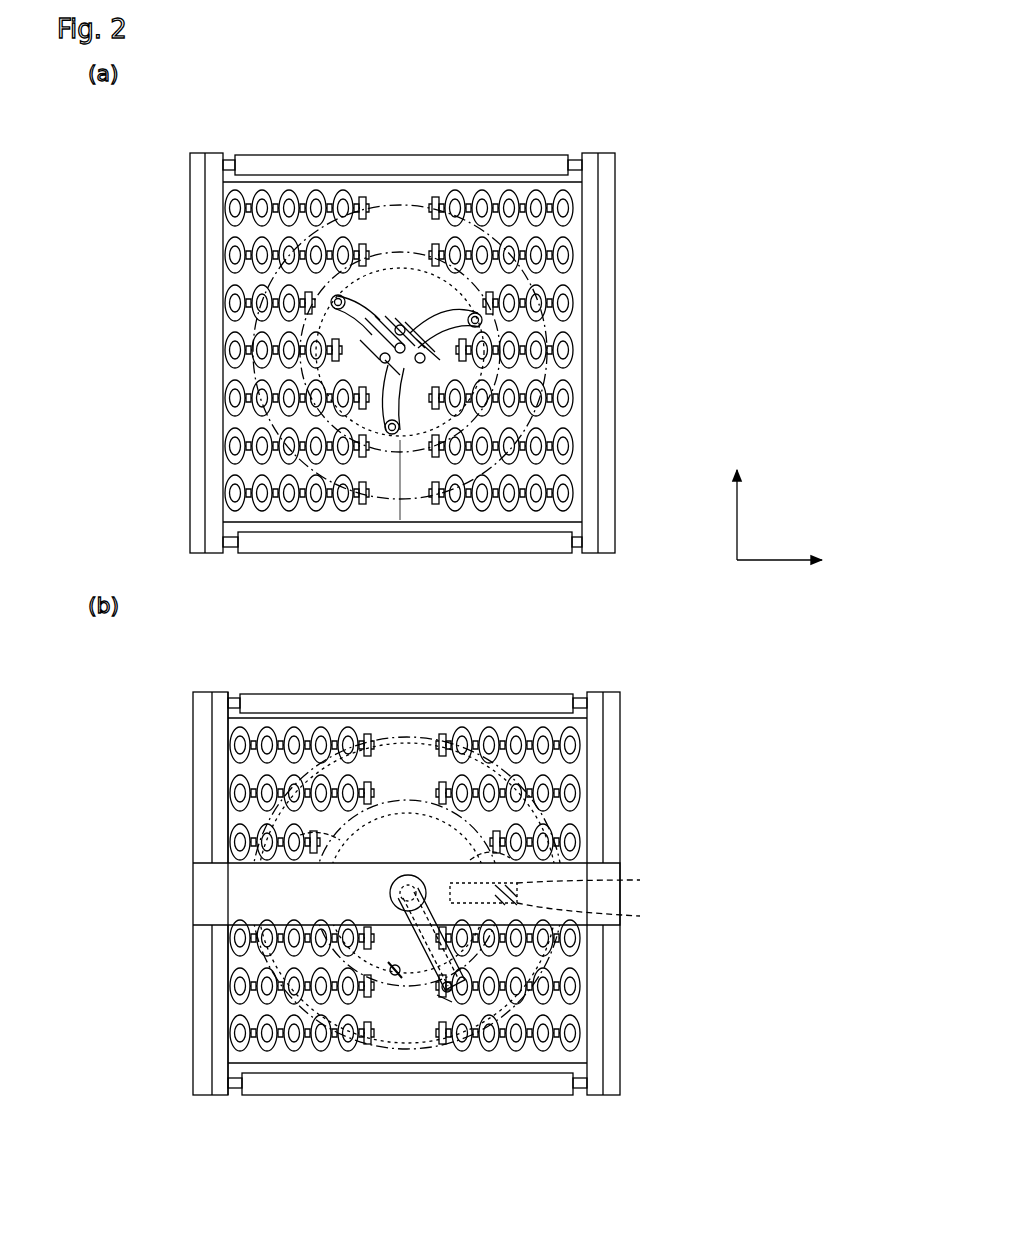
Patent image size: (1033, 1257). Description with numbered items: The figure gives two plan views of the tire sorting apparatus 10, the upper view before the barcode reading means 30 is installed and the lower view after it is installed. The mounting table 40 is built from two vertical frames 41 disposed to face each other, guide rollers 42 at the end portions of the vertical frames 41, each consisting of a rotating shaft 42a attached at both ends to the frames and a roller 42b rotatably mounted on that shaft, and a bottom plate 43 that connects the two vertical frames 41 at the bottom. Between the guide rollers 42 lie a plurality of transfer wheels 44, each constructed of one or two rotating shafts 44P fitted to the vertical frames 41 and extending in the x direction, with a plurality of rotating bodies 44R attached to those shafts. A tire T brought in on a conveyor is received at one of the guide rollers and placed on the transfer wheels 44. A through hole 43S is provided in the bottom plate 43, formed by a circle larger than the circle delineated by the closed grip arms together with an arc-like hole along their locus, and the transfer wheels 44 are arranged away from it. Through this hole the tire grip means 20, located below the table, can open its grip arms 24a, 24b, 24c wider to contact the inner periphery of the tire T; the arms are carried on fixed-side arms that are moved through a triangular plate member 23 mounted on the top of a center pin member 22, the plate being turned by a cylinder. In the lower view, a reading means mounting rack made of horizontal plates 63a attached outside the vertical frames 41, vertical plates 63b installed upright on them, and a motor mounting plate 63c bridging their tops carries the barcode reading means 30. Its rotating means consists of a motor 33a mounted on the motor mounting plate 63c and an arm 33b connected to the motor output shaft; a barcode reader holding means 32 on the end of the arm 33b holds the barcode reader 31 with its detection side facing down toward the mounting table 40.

The tire sorting apparatus 10 is at (650, 193).
The tire grip means 20 is at (420, 615).
The center pin member 22 is at (420, 615).
The triangular plate member 23 is at (442, 353).
The grip arm 24a is at (333, 300).
The grip arm 24b is at (398, 322).
The grip arm 24c is at (432, 368).
The barcode reading means 30 is at (622, 853).
The barcode reader 31 is at (560, 905).
The barcode reader holding means 32 is at (560, 885).
The motor 33a is at (393, 889).
The arm 33b is at (410, 935).
The mounting table 40 is at (537, 185).
The vertical frame 41 is at (218, 442).
The guide roller 42 is at (352, 588).
The rotating shaft 42a is at (226, 164).
The roller 42b is at (260, 170).
The bottom plate 43 is at (577, 425).
The through hole 43S is at (323, 250).
The transfer wheel 44 is at (392, 566).
The rotating body 44R is at (455, 196).
The rotating shaft 44P is at (470, 200).
The horizontal plate 63a is at (205, 400).
The vertical plate 63b is at (205, 335).
The motor mounting plate 63c is at (212, 880).
The tire T is at (262, 375).